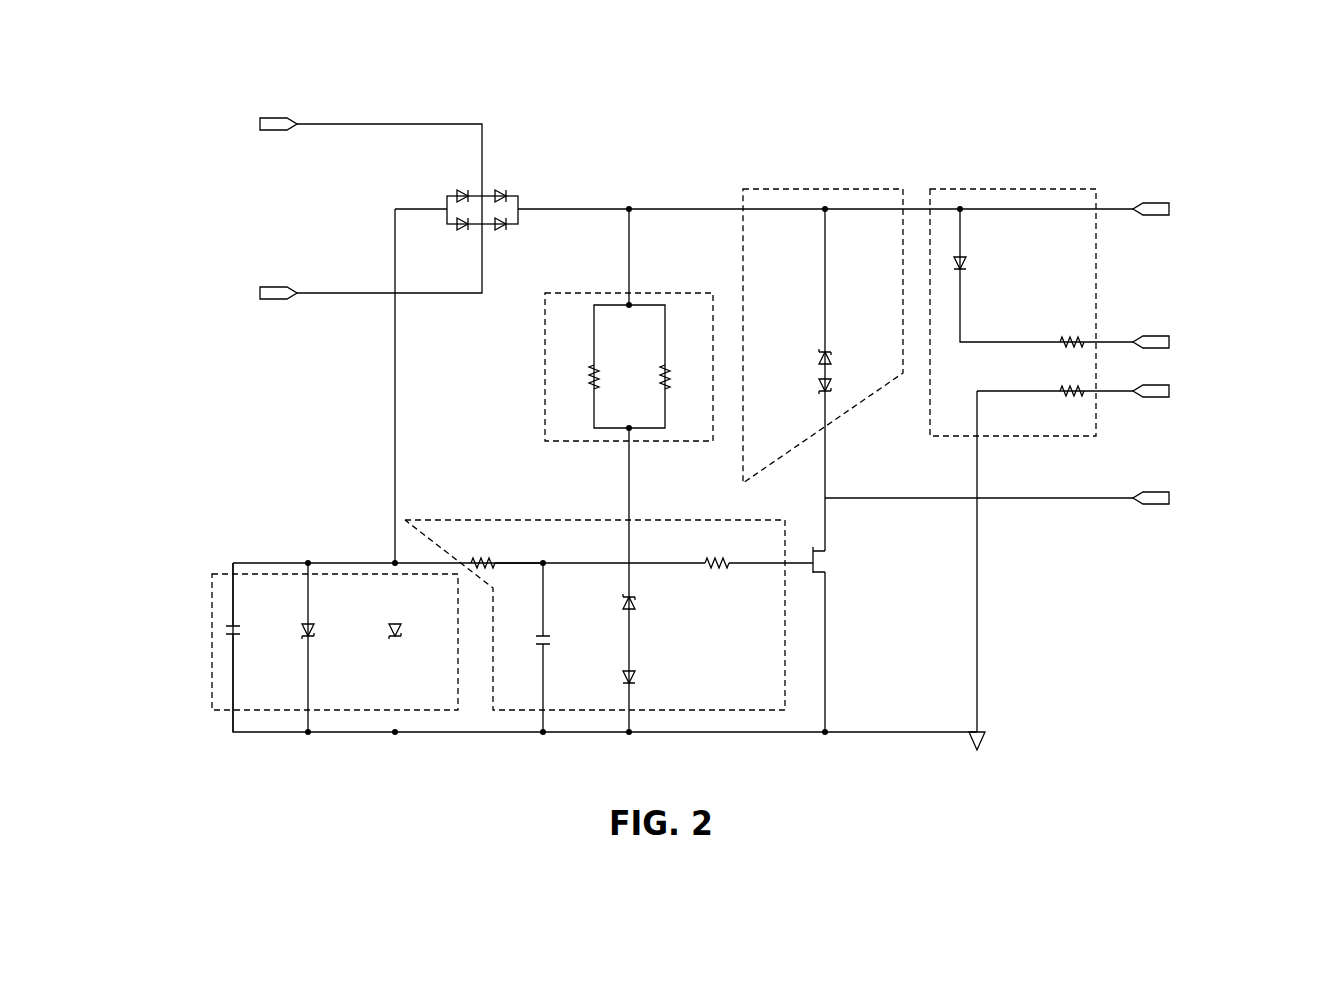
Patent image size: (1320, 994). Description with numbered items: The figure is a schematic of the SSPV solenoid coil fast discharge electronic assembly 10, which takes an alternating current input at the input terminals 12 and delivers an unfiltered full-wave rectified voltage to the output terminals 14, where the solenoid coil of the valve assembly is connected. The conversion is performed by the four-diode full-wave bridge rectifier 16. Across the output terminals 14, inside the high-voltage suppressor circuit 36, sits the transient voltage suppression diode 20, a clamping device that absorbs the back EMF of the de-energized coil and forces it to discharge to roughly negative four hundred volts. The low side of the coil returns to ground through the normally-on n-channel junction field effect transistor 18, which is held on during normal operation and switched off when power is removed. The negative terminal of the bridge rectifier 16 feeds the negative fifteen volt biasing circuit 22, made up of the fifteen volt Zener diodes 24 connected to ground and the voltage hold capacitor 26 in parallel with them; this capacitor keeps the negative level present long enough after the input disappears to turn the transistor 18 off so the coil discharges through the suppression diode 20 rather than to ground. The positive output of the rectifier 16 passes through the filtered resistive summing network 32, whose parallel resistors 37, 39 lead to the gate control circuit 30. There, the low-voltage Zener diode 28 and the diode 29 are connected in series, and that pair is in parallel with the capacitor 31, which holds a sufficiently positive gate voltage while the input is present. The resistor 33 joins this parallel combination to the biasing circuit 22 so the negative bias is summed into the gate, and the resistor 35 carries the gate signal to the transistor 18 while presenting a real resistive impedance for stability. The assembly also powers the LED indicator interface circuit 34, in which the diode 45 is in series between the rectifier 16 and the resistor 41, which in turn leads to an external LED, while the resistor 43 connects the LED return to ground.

The SSPV solenoid coil fast discharge electronic assembly 10 is at (927, 148).
The input terminals 12 is at (272, 117).
The output terminals 14 is at (1150, 203).
The full-wave bridge rectifier 16 is at (514, 198).
The normally-on n-channel junction field effect transistor 18 is at (827, 577).
The transient voltage suppression diode 20 is at (827, 356).
The negative fifteen volt biasing circuit 22 is at (572, 651).
The Zener diodes 24 is at (311, 625).
The voltage hold capacitor 26 is at (226, 628).
The Zener diode 28 is at (632, 607).
The diode 29 is at (633, 672).
The gate control circuit 30 is at (695, 629).
The capacitor 31 is at (545, 637).
The filtered resistive summing network 32 is at (629, 470).
The resistor 33 is at (489, 557).
The LED indicator interface circuit 34 is at (1041, 460).
The resistor 35 is at (718, 558).
The high-voltage suppressor circuit 36 is at (823, 436).
The resistor 37 is at (593, 364).
The resistor 39 is at (666, 364).
The resistor 41 is at (1071, 339).
The resistor 43 is at (1084, 390).
The diode 45 is at (962, 262).